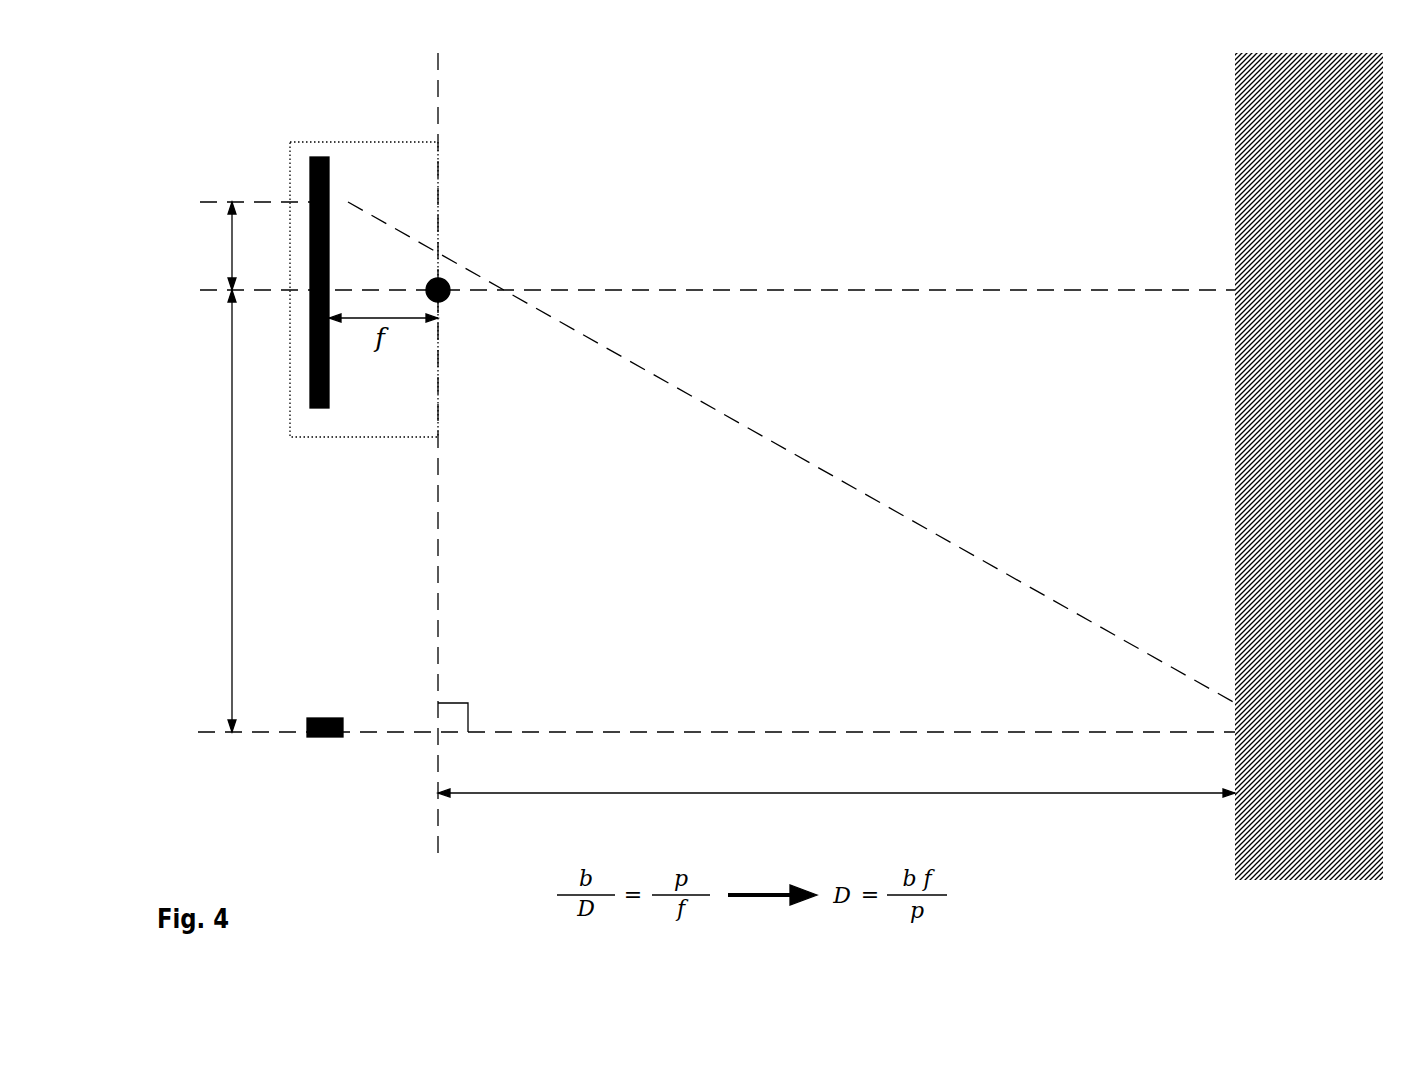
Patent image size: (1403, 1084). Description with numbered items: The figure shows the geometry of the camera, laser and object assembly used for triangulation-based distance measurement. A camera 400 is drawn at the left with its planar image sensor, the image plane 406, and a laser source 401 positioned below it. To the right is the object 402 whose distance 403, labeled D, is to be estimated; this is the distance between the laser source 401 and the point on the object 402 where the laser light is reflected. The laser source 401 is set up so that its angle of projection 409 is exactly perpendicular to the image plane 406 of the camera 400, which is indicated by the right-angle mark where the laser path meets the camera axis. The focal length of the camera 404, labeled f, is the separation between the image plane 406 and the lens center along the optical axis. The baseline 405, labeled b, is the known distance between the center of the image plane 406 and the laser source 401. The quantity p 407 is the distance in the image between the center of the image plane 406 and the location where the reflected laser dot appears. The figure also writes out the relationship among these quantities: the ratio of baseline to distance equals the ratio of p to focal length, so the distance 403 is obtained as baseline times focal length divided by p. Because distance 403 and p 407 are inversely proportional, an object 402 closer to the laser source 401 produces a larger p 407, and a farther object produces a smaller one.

The camera 400 is at (382, 142).
The laser source 401 is at (307, 733).
The object 402 is at (1235, 175).
The distance 403 is at (1039, 793).
The focal length of the camera 404 is at (400, 322).
The baseline 405 is at (230, 592).
The image plane 406 is at (329, 172).
The distance between the center of the image plane and the reflected laser dot locat 407 is at (232, 220).
The angle of projection 409 is at (468, 710).